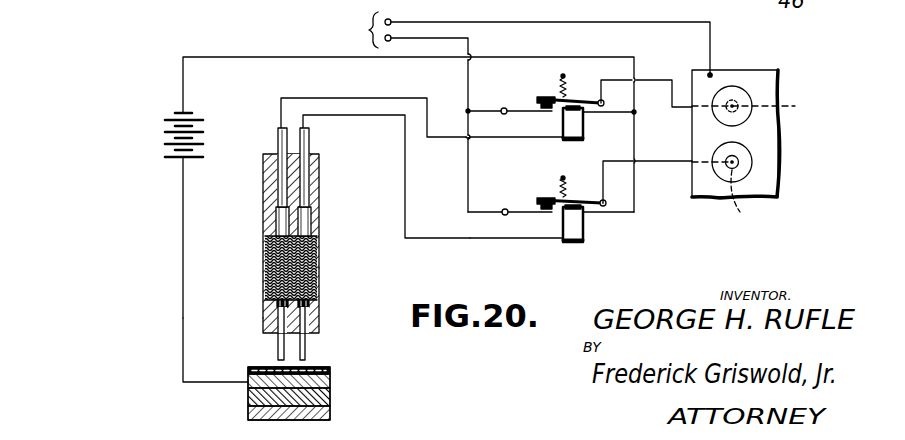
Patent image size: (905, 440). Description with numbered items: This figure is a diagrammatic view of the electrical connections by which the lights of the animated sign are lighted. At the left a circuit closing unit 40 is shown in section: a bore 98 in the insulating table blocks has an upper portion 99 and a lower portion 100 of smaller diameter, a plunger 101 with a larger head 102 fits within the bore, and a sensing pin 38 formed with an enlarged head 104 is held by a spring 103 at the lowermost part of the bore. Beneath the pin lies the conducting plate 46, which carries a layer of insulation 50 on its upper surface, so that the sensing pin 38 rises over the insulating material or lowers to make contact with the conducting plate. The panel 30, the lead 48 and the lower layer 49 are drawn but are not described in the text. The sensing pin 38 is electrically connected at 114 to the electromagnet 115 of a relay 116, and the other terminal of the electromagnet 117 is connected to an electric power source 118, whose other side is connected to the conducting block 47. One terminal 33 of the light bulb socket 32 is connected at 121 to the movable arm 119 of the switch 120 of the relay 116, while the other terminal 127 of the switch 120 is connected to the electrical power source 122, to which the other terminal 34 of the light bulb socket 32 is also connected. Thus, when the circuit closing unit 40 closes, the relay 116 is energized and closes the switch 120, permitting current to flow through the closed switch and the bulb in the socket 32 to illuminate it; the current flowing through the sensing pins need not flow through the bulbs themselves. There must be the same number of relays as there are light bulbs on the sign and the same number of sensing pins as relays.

The electric power source 118 is at (169, 114).
The electrical power source 122 is at (522, 112).
The other terminal of the switch 127 is at (518, 88).
The movable arm 119 is at (580, 98).
The relay 116 is at (576, 128).
The other terminal of the electromagnet 117 is at (585, 218).
The electromagnet 115 is at (578, 228).
The electrical connection 114 is at (560, 248).
The switch 120 is at (540, 198).
The electrical connection 121 is at (630, 186).
The other terminal of light bulb socket 34 is at (712, 72).
The plate 30 is at (758, 126).
The light bulb socket 32 is at (748, 95).
The one terminal of light bulb socket 33 is at (759, 158).
The upper portion of bore 99 is at (321, 173).
The spring 103 is at (319, 275).
The plunger head 102 is at (318, 211).
The lower portion of bore 100 is at (321, 300).
The plunger 101 is at (283, 136).
The sensing pin 38 is at (306, 345).
The bore 98 is at (266, 257).
The circuit closing unit 40 is at (368, 243).
The enlarged head of sensing pin 104 is at (260, 320).
The conductor 48 is at (232, 300).
The layer of insulation 50 is at (330, 368).
The conducting plate 46 is at (331, 372).
The conducting block 47 is at (331, 384).
The plate 49 is at (331, 404).